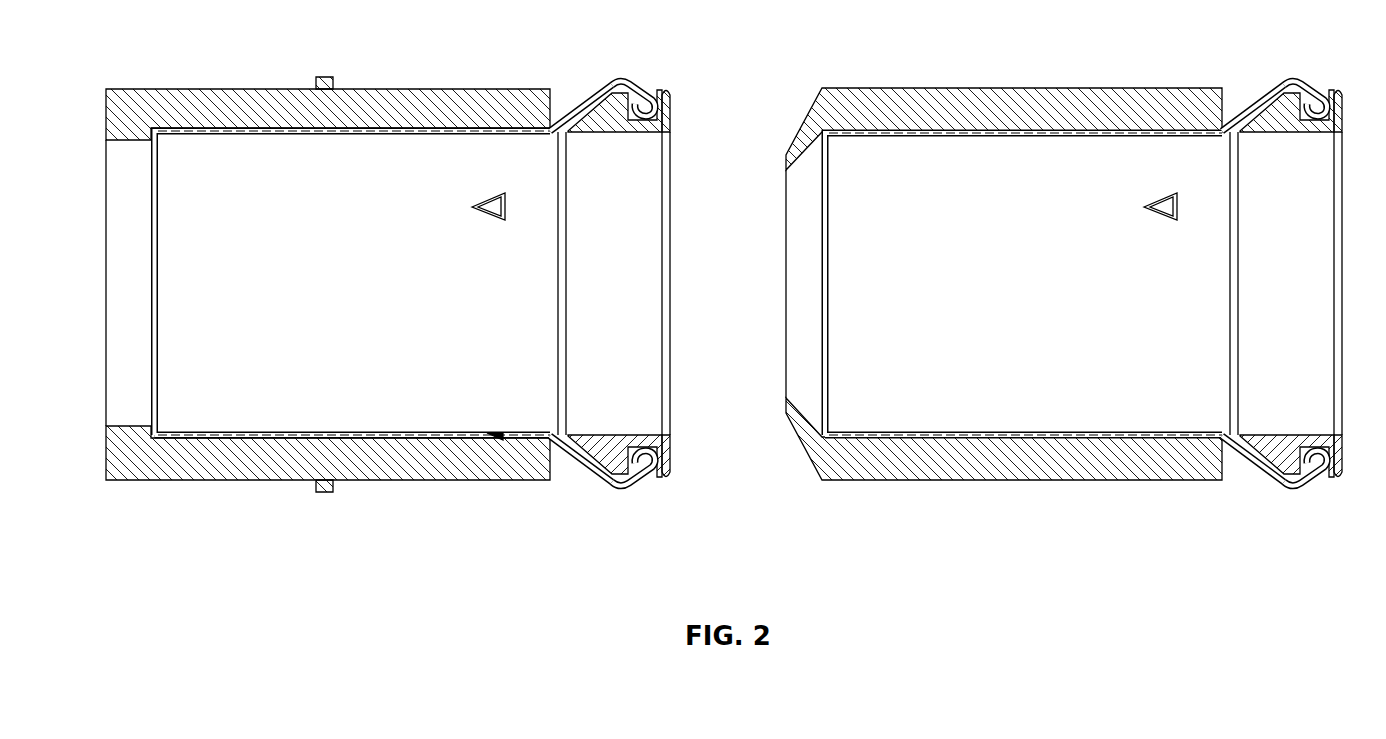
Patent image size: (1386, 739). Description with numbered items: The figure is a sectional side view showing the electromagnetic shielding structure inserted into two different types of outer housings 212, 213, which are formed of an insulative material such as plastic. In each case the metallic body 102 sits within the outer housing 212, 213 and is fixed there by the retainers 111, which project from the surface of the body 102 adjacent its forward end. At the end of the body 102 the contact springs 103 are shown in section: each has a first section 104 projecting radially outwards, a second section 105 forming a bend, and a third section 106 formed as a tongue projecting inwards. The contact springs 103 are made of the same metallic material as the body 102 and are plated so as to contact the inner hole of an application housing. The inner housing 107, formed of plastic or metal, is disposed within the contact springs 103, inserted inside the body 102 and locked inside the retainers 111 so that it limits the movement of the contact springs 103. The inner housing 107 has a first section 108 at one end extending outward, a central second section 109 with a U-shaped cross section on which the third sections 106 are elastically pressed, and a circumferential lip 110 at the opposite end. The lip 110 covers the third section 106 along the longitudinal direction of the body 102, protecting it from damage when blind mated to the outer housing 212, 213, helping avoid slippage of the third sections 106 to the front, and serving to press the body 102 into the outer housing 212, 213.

The body 102 is at (388, 148).
The contact spring 103 is at (622, 490).
The first section 104 is at (596, 100).
The second section 105 is at (626, 78).
The third section 106 is at (645, 88).
The inner housing 107 is at (677, 287).
The first section 108 is at (598, 472).
The central second section 109 is at (657, 474).
The circumferential lip 110 is at (673, 456).
The retainer 111 is at (500, 442).
The outer housing 212 is at (137, 482).
The outer housing 213 is at (857, 480).